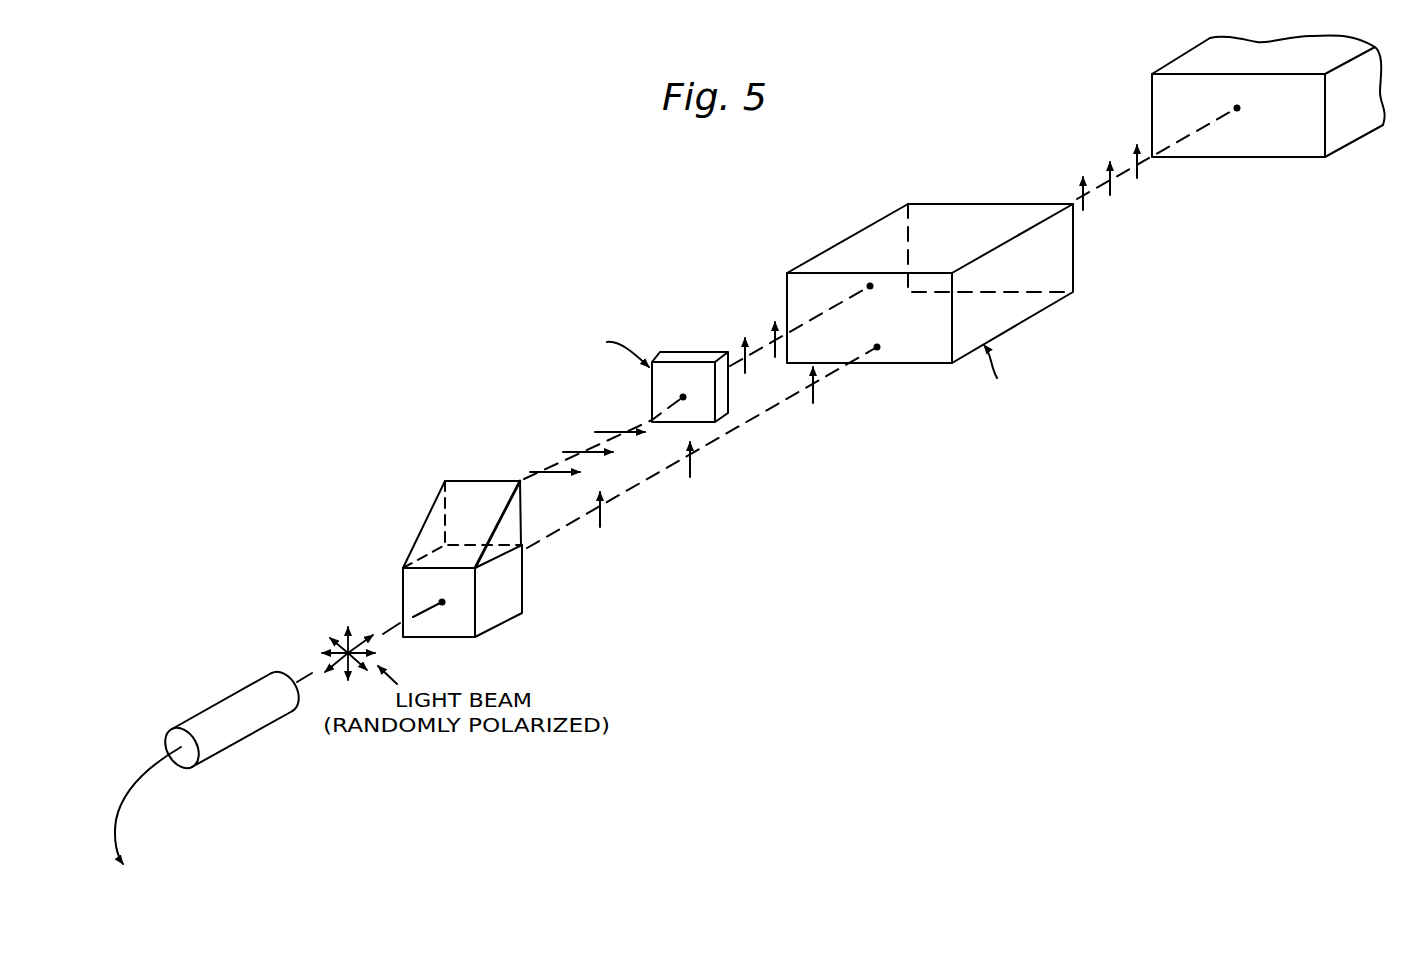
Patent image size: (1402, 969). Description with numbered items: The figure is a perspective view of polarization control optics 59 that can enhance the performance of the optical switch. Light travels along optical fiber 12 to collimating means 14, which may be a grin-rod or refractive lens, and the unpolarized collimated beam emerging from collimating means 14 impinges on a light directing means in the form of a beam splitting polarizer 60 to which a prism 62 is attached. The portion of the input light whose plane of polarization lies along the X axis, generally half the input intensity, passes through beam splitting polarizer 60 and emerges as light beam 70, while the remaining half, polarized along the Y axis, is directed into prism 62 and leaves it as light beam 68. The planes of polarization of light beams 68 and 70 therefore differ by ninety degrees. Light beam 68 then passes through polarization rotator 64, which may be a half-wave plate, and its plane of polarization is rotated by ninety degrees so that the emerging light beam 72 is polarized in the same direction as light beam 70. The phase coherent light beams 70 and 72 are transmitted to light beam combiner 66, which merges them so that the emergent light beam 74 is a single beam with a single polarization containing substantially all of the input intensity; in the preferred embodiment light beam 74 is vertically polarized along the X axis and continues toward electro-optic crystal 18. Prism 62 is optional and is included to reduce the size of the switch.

The optical fiber 12 is at (118, 820).
The collimating means 14 is at (212, 708).
The electro-optic crystal 18 is at (1353, 128).
The polarization control optics 59 is at (700, 247).
The beam splitting polarizer 60 is at (497, 615).
The prism 62 is at (428, 525).
The polarization rotator 64 is at (690, 352).
The light beam combiner 66 is at (1045, 312).
The light beam 68 is at (600, 453).
The light beam 70 is at (630, 493).
The light beam 72 is at (757, 347).
The emergent light beam 74 is at (1089, 197).